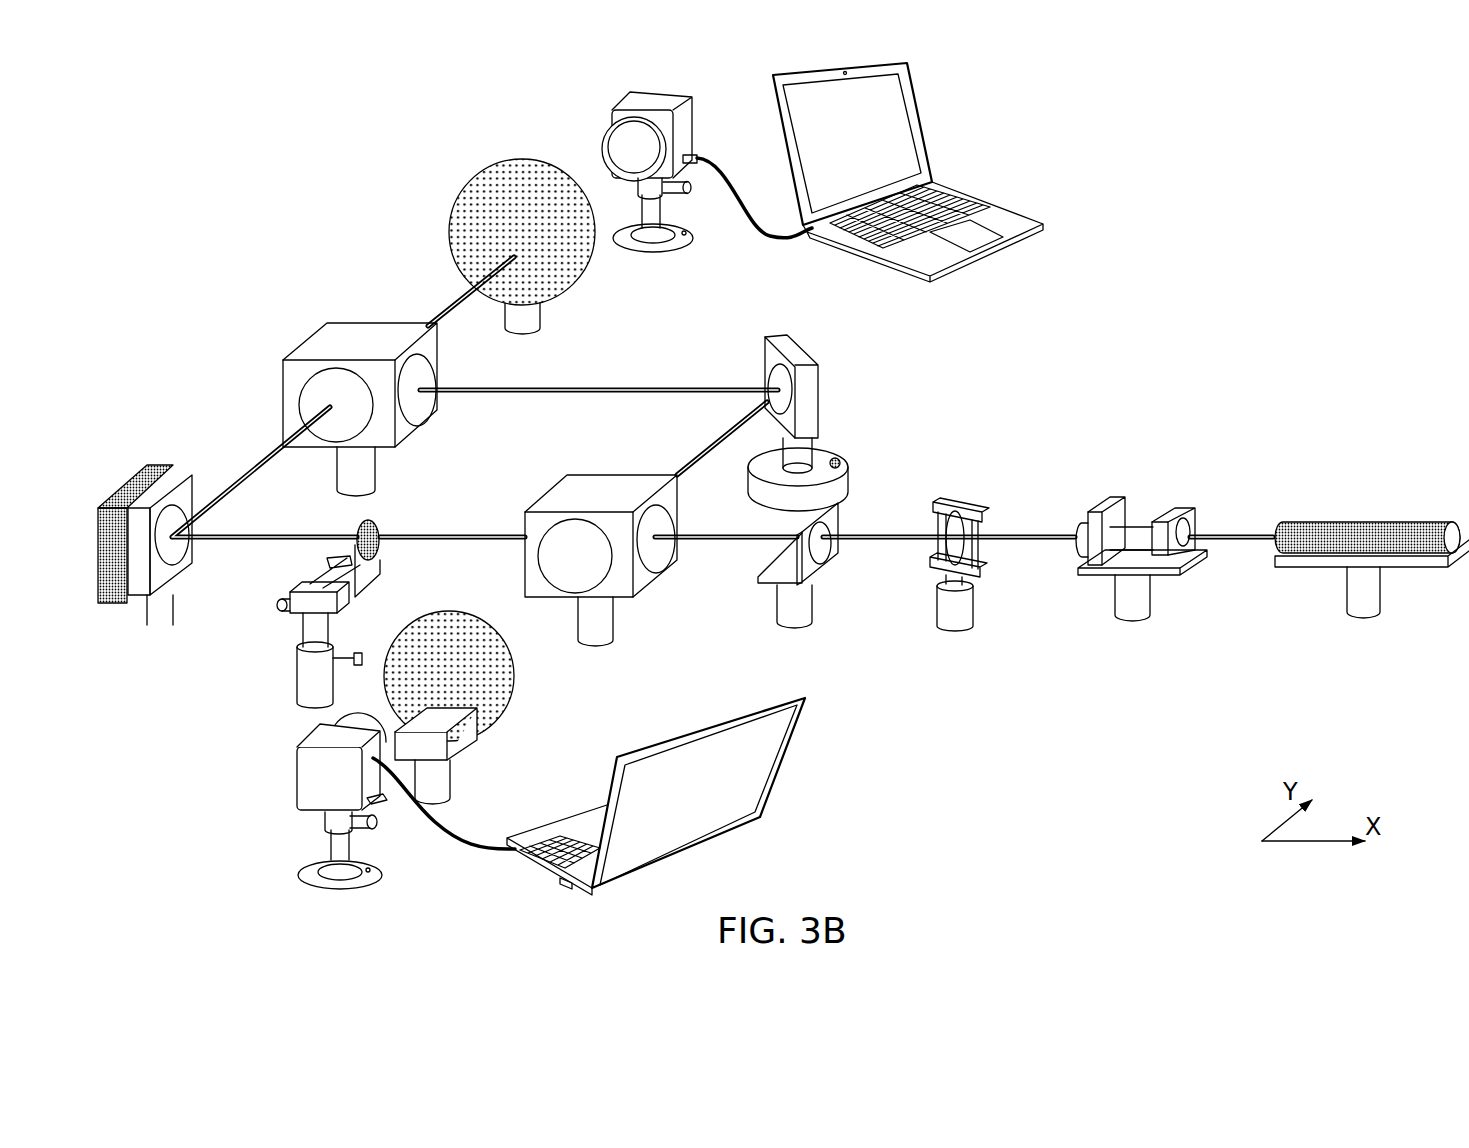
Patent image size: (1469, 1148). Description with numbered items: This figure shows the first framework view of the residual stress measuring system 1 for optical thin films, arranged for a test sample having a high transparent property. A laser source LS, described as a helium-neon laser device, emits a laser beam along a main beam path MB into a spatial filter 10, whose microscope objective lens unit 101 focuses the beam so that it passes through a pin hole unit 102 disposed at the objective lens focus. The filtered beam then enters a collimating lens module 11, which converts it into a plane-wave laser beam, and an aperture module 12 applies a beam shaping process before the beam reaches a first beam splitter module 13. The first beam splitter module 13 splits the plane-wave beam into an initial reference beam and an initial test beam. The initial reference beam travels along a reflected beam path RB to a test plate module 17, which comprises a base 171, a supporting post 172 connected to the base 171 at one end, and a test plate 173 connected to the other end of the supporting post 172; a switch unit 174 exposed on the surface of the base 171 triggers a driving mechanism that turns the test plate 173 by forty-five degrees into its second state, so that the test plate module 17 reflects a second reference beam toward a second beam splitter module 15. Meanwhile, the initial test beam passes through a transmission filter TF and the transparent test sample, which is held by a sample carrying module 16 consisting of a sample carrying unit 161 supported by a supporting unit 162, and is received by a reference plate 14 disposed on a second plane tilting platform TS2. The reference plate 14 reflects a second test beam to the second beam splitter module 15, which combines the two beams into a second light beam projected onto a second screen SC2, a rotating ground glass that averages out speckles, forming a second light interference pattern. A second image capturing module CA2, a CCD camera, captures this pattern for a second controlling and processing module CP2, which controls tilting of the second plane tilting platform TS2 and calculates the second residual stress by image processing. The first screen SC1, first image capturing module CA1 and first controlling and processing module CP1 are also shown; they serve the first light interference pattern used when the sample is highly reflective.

The residual stress measuring system 1 is at (1170, 242).
The spatial filter 10 is at (1142, 511).
The microscope objective lens unit 101 is at (1180, 506).
The pin hole unit 102 is at (1104, 506).
The collimating lens module 11 is at (970, 500).
The aperture module 12 is at (816, 570).
The first beam splitter module 13 is at (624, 482).
The reference plate 14 is at (190, 473).
The second beam splitter module 15 is at (320, 338).
The sample carrying module 16 is at (266, 632).
The sample carrying unit 161 is at (312, 577).
The supporting unit 162 is at (302, 625).
The test plate module 17 is at (860, 421).
The base 171 is at (836, 474).
The supporting post 172 is at (810, 450).
The test plate 173 is at (818, 380).
The switch unit 174 is at (838, 457).
The second plane tilting platform TS2 is at (157, 465).
The transmission filter TF is at (378, 525).
The main beam MB is at (498, 532).
The reflected beam RB is at (700, 458).
The laser source LS is at (1410, 520).
The first screen SC1 is at (513, 712).
The second screen SC2 is at (460, 192).
The first image capturing module CA1 is at (297, 814).
The second image capturing module CA2 is at (612, 118).
The first controlling and processing module CP1 is at (778, 804).
The second controlling and processing module CP2 is at (938, 152).